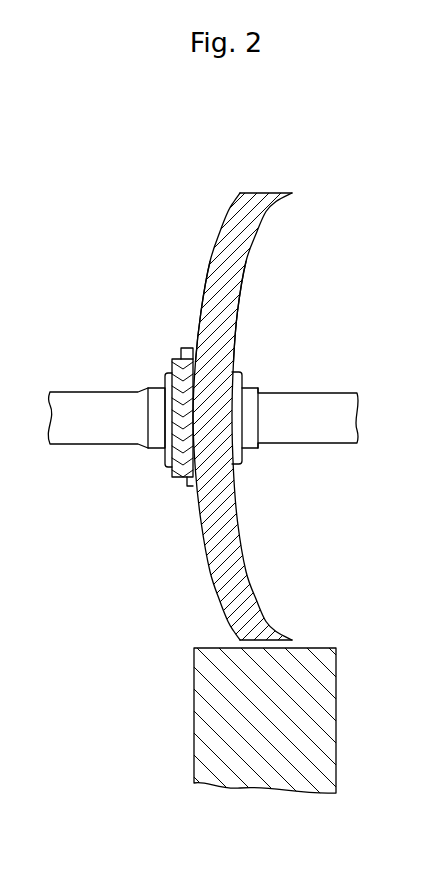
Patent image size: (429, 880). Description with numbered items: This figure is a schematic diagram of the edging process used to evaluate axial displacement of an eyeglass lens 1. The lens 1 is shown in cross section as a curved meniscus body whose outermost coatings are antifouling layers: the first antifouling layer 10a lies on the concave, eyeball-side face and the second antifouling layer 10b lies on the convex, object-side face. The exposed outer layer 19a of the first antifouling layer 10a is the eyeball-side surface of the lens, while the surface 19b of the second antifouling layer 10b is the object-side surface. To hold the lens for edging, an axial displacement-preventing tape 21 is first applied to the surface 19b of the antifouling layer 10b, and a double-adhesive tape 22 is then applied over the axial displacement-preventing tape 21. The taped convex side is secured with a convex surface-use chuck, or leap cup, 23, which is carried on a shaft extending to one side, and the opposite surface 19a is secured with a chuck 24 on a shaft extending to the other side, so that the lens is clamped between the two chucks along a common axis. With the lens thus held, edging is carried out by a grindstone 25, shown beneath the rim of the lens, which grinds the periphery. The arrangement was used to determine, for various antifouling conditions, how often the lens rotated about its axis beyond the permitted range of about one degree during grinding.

The eyeglass lens 1 is at (283, 153).
The first antifouling layer 10a is at (252, 242).
The second antifouling layer 10b is at (215, 238).
The outer layer (surface) of the first antifouling layer 19a is at (236, 303).
The surface of the second antifouling layer 19b is at (198, 307).
The axial displacement-preventing tape 21 is at (188, 348).
The double-adhesive tape 22 is at (177, 360).
The convex surface-use chuck (leap cup) 23 is at (65, 402).
The chuck 24 is at (302, 400).
The grindstone 25 is at (317, 723).